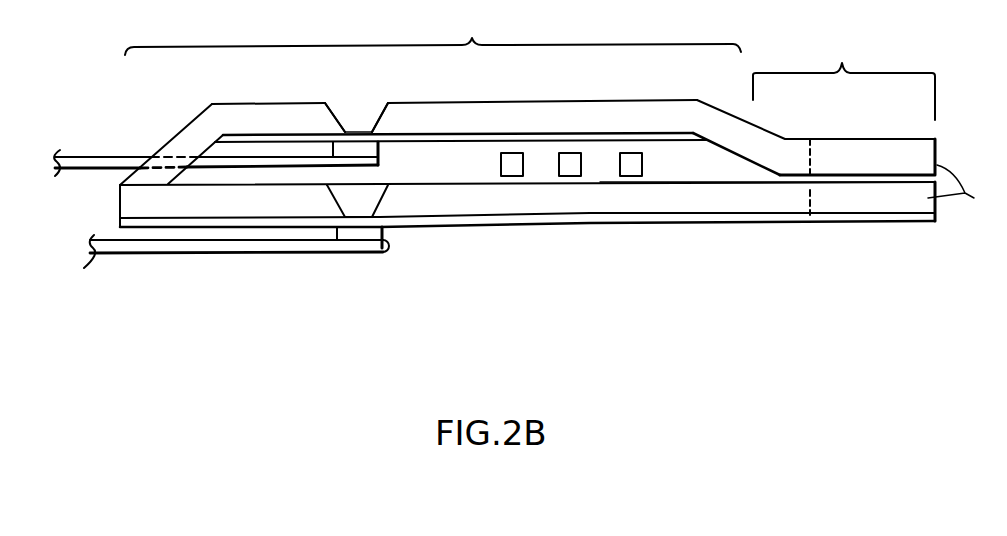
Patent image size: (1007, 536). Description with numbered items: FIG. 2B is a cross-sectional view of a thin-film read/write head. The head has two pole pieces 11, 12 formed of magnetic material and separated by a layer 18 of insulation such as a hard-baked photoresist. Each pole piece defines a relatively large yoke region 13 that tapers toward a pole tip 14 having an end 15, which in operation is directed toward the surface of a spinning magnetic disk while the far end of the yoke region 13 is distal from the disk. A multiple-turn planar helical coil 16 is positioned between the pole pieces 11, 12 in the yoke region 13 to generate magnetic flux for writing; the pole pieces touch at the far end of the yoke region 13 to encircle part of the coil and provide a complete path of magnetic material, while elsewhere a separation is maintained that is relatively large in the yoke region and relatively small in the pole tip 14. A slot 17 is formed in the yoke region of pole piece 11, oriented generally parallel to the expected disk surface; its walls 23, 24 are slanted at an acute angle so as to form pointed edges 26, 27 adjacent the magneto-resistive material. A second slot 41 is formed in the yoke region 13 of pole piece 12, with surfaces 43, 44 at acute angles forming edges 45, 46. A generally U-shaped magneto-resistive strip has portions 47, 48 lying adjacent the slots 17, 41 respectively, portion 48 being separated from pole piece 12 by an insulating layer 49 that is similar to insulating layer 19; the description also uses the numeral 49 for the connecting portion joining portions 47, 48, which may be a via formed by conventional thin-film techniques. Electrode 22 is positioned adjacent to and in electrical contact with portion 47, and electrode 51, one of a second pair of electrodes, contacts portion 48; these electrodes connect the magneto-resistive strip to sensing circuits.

The pole piece 11 is at (130, 199).
The pole piece 12 is at (190, 134).
The yoke region 13 is at (433, 35).
The pole tip 14 is at (814, 127).
The end 15 is at (963, 187).
The multiple-turn planar helical coil 16 is at (505, 177).
The slot 17 is at (365, 188).
The layer of insulation 18 is at (710, 172).
The insulating layer 19 is at (862, 222).
The electrode 22 is at (148, 248).
The wall 23 is at (335, 198).
The wall 24 is at (375, 212).
The pointed edge 26 is at (351, 204).
The pointed edge 27 is at (379, 202).
The slot 41 is at (359, 104).
The surface 43 is at (330, 101).
The surface 44 is at (388, 101).
The edge 45 is at (346, 131).
The edge 46 is at (372, 131).
The portion of magneto-resistive strip 47 is at (367, 233).
The portion of magneto-resistive strip 48 is at (383, 149).
The insulating layer 49 is at (608, 136).
The electrode 51 is at (113, 156).